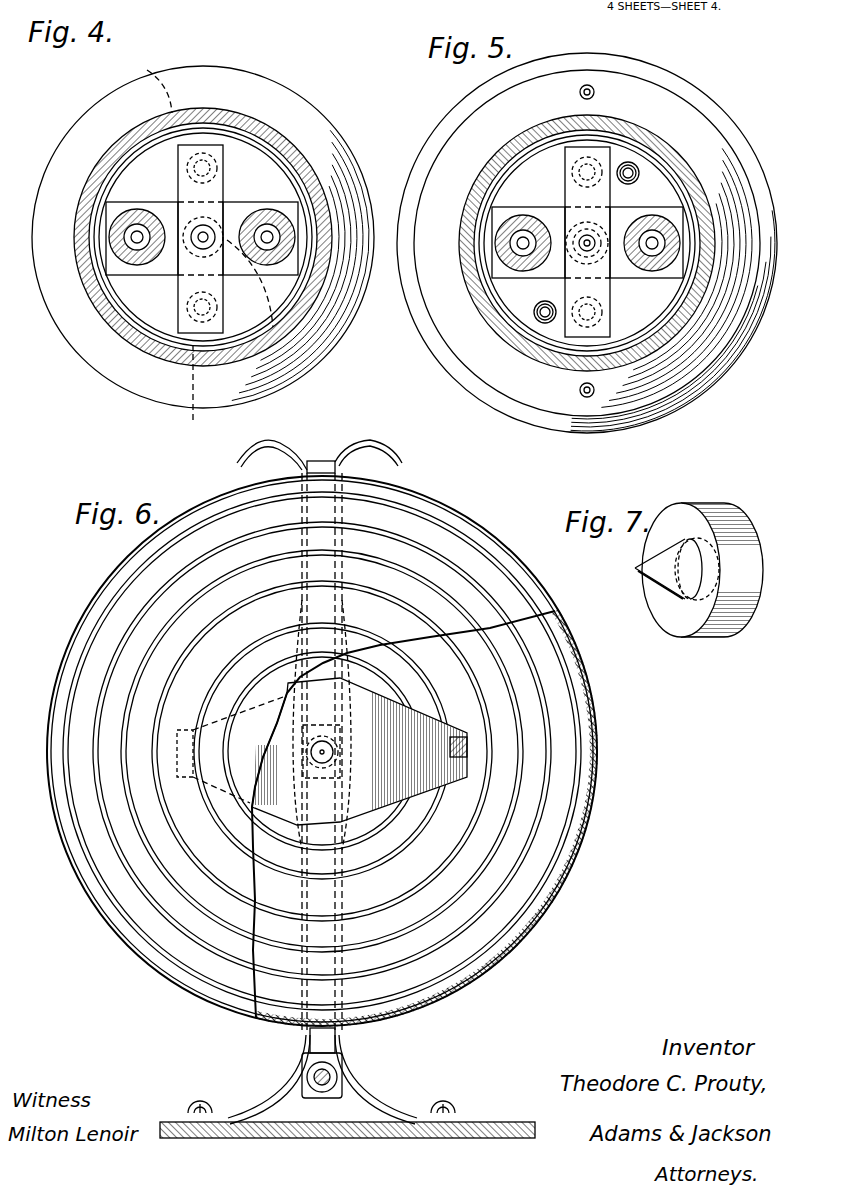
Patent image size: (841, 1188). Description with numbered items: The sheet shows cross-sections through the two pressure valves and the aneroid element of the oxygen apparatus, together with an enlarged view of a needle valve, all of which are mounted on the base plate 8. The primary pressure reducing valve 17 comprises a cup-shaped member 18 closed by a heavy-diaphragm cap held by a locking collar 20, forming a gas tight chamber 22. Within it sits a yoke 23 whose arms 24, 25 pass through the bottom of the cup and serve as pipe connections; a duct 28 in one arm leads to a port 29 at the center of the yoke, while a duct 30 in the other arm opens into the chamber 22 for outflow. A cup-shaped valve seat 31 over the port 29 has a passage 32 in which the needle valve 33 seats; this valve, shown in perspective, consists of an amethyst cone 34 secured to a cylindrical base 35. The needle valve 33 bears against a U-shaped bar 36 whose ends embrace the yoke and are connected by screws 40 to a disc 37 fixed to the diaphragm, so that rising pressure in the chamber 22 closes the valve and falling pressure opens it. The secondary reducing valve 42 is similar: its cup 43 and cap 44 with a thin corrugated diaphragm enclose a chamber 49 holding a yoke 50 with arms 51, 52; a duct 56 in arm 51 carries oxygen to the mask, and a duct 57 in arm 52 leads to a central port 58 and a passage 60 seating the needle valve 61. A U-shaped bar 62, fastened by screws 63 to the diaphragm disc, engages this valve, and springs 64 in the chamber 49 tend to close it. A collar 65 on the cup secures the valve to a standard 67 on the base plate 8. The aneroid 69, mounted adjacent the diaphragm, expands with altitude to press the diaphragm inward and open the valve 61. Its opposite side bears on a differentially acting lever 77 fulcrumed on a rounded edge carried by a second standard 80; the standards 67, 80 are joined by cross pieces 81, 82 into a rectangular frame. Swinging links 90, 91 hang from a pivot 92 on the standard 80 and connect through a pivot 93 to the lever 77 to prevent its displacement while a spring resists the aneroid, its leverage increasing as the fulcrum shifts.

In FIG. 6, the base plate 8 is at (228, 1138).
In FIG. 4, the primary pressure reducing valve 17 is at (86, 157).
In FIG. 4, the cup-shaped member 18 is at (85, 268).
In FIG. 4, the locking collar 20 is at (70, 302).
In FIG. 4, the gas tight chamber 22 is at (90, 243).
In FIG. 4, the yoke 23 is at (140, 330).
In FIG. 4, the arm of the yoke 24 is at (218, 231).
In FIG. 4, the arm of the yoke 25 is at (112, 236).
In FIG. 4, the duct 28 is at (288, 228).
In FIG. 4, the port 29 is at (288, 355).
In FIG. 4, the duct 30 is at (183, 255).
In FIG. 4, the cup-shaped valve seat 31 is at (205, 255).
In FIG. 4, the passage 32 is at (252, 187).
In FIG. 4, the needle valve 33 is at (240, 207).
In FIG. 7, the needle valve 33 is at (677, 558).
In FIG. 7, the cone 34 is at (672, 597).
In FIG. 4, the cylindrical base 35 is at (195, 258).
In FIG. 7, the cylindrical base 35 is at (745, 527).
In FIG. 4, the U-shaped bar 36 is at (182, 157).
In FIG. 4, the disc 37 is at (158, 173).
In FIG. 4, the screws 40 is at (199, 246).
In FIG. 5, the secondary reducing valve 42 is at (480, 322).
In FIG. 5, the cup 43 is at (514, 340).
In FIG. 5, the cap 44 is at (527, 358).
In FIG. 5, the chamber 49 is at (553, 342).
In FIG. 5, the yoke 50 is at (466, 280).
In FIG. 5, the arm of the yoke 51 is at (690, 317).
In FIG. 5, the arm of the yoke 52 is at (478, 262).
In FIG. 5, the duct 56 is at (673, 280).
In FIG. 5, the duct 57 is at (495, 235).
In FIG. 5, the central port 58 is at (666, 160).
In FIG. 5, the passage 60 is at (698, 160).
In FIG. 5, the needle valve 61 is at (700, 178).
In FIG. 5, the U-shaped bar 62 is at (562, 150).
In FIG. 5, the screws 63 is at (640, 150).
In FIG. 5, the springs 64 is at (632, 165).
In FIG. 5, the collar 65 is at (636, 414).
In FIG. 6, the standard 67 is at (290, 1078).
In FIG. 6, the aneroid 69 is at (572, 886).
In FIG. 6, the differentially acting lever 77 is at (338, 905).
In FIG. 6, the standard 80 is at (343, 930).
In FIG. 6, the cross piece 81 is at (343, 464).
In FIG. 6, the cross piece 82 is at (343, 1052).
In FIG. 6, the swinging link 90 is at (256, 858).
In FIG. 6, the swinging link 91 is at (345, 830).
In FIG. 6, the pivot 92 is at (343, 541).
In FIG. 6, the pivot 93 is at (340, 852).